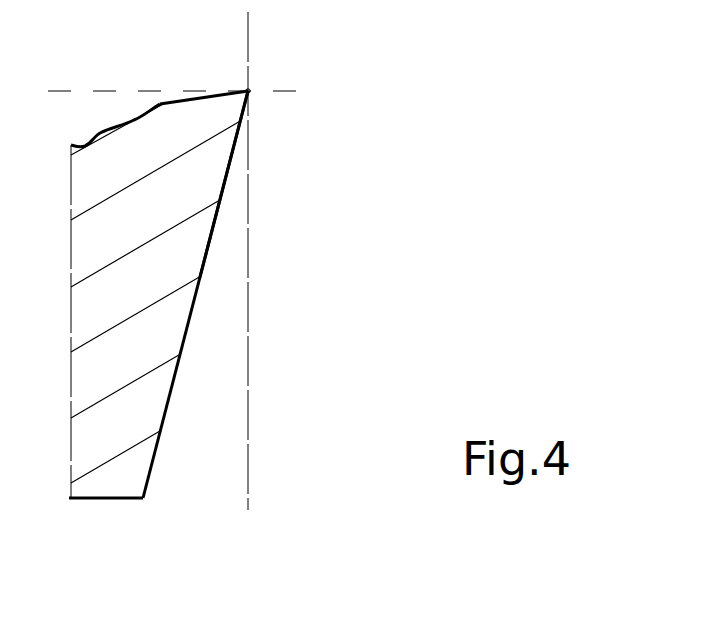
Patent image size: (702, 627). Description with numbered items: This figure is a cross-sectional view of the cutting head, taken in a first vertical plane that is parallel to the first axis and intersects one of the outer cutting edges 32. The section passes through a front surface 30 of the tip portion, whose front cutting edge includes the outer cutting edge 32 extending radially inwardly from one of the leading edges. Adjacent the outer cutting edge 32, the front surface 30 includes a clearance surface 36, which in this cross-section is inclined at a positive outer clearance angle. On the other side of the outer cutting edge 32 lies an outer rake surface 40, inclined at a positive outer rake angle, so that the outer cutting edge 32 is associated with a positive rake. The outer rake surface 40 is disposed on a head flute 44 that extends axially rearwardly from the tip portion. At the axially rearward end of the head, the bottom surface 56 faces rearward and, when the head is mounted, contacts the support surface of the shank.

The front surface 30 is at (132, 110).
The clearance surface 36 is at (203, 97).
The outer cutting edge 32 is at (248, 91).
The outer rake surface 40 is at (227, 188).
The head flute 44 is at (189, 326).
The bottom surface 56 is at (112, 500).